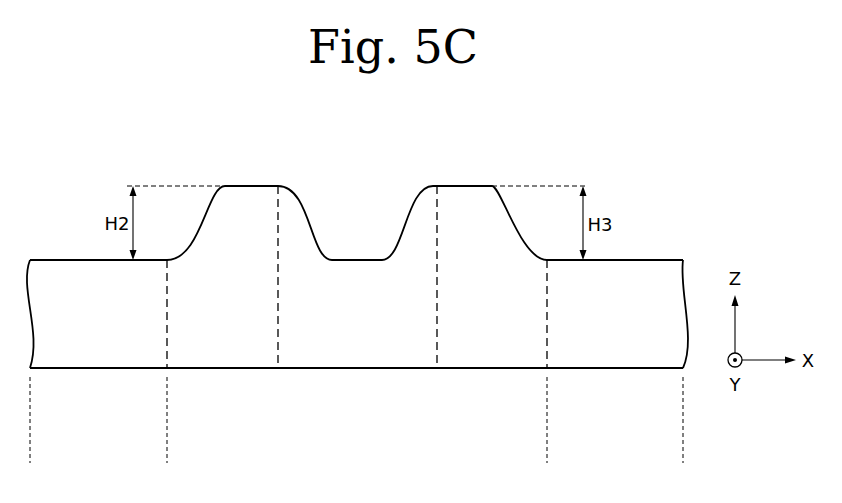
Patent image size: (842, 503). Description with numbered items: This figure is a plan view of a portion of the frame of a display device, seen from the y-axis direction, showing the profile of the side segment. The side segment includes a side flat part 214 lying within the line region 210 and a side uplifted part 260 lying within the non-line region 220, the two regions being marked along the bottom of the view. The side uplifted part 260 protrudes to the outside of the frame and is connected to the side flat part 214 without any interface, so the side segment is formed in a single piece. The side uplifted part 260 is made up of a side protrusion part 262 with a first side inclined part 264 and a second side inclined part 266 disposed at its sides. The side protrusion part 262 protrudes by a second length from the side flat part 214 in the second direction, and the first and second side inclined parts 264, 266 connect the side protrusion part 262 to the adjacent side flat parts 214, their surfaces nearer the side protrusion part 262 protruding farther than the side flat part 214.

The line region 210 is at (683, 447).
The non-line region 220 is at (167, 447).
The side flat part 214 is at (59, 272).
The side uplifted part 260 is at (225, 125).
The first side inclined part 264 is at (232, 200).
The side protrusion part 262 is at (352, 270).
The second side inclined part 266 is at (465, 197).